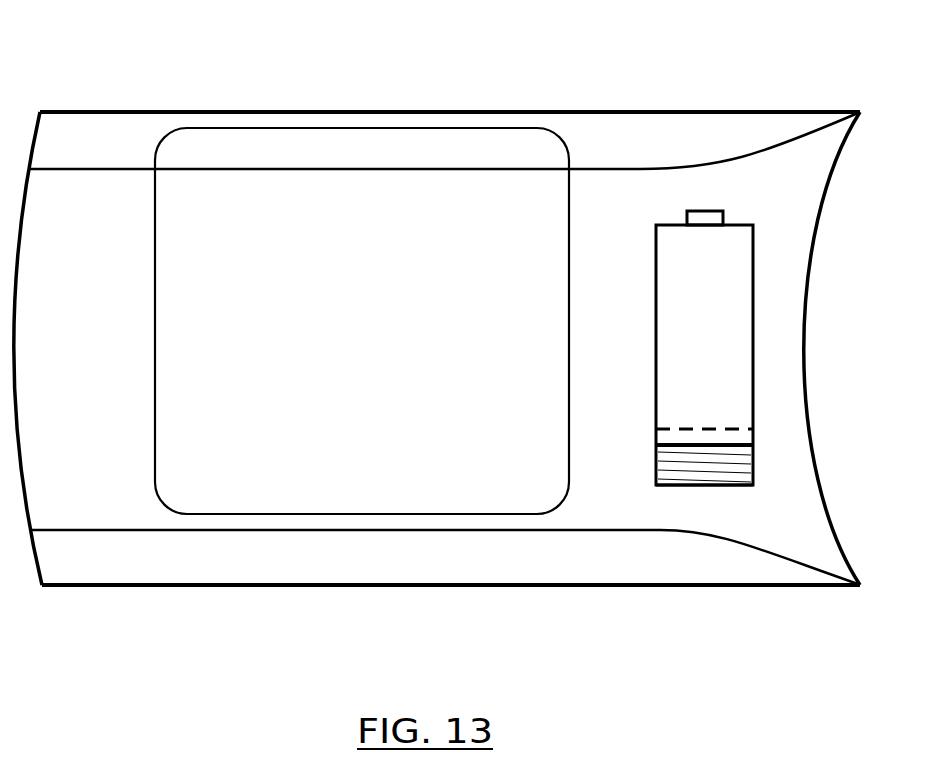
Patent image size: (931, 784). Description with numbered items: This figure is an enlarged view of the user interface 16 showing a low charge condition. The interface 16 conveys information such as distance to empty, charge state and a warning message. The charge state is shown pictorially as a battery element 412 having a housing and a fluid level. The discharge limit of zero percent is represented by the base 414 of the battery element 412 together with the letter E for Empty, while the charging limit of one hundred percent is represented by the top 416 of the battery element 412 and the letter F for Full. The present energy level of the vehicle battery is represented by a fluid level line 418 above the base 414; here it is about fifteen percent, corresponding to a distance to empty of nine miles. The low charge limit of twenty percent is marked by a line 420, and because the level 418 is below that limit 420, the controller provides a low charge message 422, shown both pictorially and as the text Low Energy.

The user interface 16 is at (517, 104).
The low charge message 422 is at (145, 290).
The battery element 412 is at (757, 343).
The top of the battery element 416 is at (740, 218).
The low charge limit 420 is at (725, 428).
The fluid level line 418 is at (676, 446).
The base of the battery element 414 is at (713, 485).